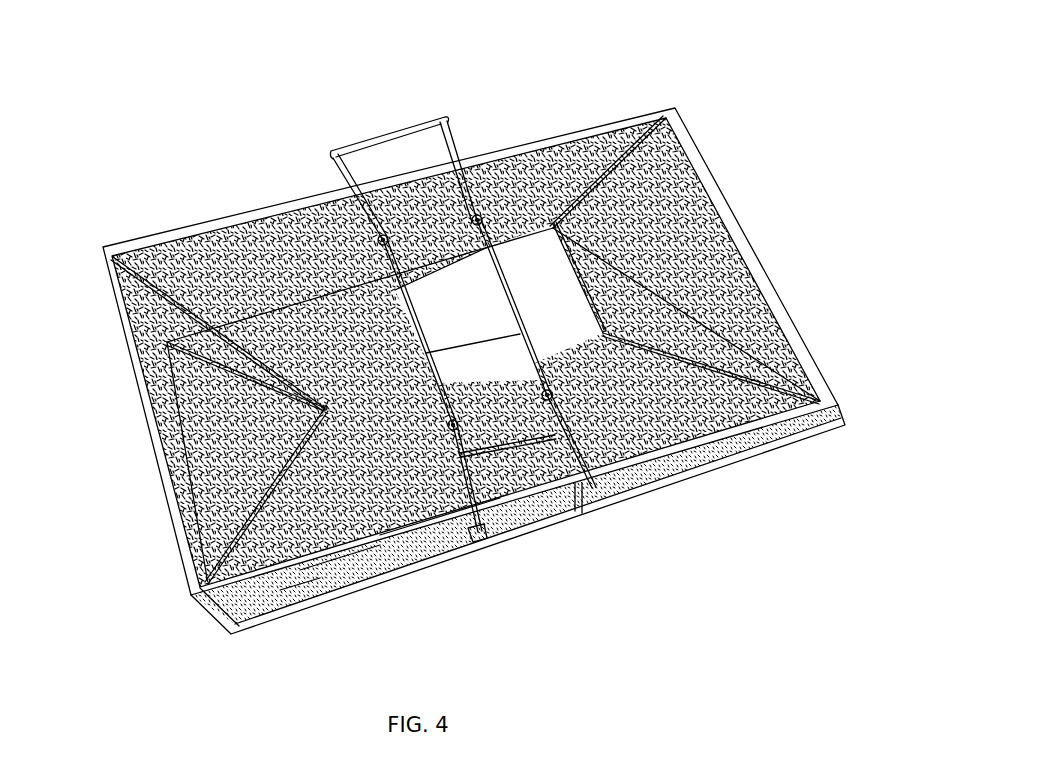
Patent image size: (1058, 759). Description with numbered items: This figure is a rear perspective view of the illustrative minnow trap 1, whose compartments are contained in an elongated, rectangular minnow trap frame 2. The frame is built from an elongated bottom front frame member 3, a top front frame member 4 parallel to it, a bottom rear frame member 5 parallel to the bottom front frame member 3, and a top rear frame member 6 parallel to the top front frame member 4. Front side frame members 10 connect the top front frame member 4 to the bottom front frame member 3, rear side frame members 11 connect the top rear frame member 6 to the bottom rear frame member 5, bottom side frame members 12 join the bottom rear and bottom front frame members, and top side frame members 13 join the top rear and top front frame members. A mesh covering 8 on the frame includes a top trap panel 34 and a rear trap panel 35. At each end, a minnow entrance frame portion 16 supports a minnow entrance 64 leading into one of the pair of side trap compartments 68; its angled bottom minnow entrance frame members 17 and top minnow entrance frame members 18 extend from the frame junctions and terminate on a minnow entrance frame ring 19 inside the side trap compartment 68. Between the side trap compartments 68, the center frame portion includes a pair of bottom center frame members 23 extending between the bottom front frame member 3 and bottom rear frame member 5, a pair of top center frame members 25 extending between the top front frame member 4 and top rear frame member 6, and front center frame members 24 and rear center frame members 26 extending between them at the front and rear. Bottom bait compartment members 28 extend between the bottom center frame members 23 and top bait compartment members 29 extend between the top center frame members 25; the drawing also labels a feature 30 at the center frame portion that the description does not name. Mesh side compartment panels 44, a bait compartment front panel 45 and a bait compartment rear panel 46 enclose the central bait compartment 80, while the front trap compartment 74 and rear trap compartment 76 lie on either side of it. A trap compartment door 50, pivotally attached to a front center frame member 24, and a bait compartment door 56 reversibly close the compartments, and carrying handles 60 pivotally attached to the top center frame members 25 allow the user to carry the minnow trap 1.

The minnow trap 1 is at (147, 100).
The minnow trap frame 2 is at (423, 580).
The bottom front frame member 3 is at (287, 307).
The top front frame member 4 is at (550, 135).
The bottom rear frame member 5 is at (377, 587).
The top rear frame member 6 is at (300, 572).
The mesh covering 8 is at (347, 590).
The front side frame members 10 is at (207, 610).
The rear side frame members 11 is at (140, 312).
The bottom side frame members 12 is at (197, 503).
The top side frame members 13 is at (167, 453).
The minnow entrance frame portion 16 is at (117, 267).
The bottom minnow entrance frame members 17 is at (207, 400).
The top minnow entrance frame members 18 is at (135, 305).
The minnow entrance frame ring 19 is at (327, 408).
The bottom center frame members 23 is at (437, 517).
The front center frame members 24 is at (430, 270).
The top center frame members 25 is at (413, 300).
The rear center frame members 26 is at (568, 423).
The bottom bait compartment members 28 is at (490, 350).
The top bait compartment members 29 is at (400, 282).
The pivot pin 30 is at (490, 240).
The top trap panel 34 is at (170, 262).
The rear trap panel 35 is at (110, 275).
The side compartment panels 44 is at (482, 226).
The bait compartment front panel 45 is at (440, 310).
The bait compartment rear panel 46 is at (495, 400).
The trap compartment door 50 is at (362, 215).
The bait compartment door 56 is at (545, 228).
The carrying handle 60 is at (450, 118).
The minnow entrance 64 is at (213, 422).
The side trap compartments 68 is at (220, 257).
The front trap compartment 74 is at (386, 222).
The rear trap compartment 76 is at (583, 497).
The central bait compartment 80 is at (398, 190).